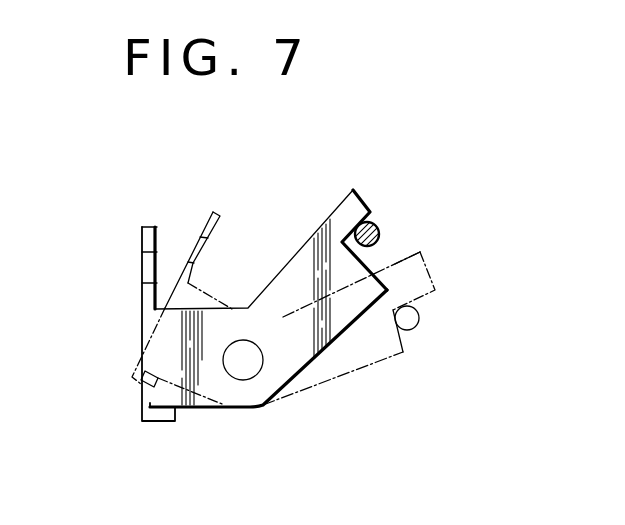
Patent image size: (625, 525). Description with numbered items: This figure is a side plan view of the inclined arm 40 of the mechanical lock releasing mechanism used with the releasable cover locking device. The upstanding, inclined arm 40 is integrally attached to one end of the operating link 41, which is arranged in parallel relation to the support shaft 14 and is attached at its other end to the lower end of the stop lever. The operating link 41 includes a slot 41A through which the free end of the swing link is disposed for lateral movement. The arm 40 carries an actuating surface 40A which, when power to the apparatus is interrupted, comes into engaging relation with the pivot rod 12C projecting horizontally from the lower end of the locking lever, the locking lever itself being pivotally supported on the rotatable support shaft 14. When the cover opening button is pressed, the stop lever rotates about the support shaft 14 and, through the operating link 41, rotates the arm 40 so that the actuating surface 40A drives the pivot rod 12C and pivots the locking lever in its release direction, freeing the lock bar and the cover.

The inclined arm 40 is at (305, 262).
The actuating surface 40A is at (372, 214).
The pivot rod 12C is at (380, 235).
The support shaft 14 is at (247, 368).
The operating link 41 is at (147, 298).
The slot 41A is at (147, 262).